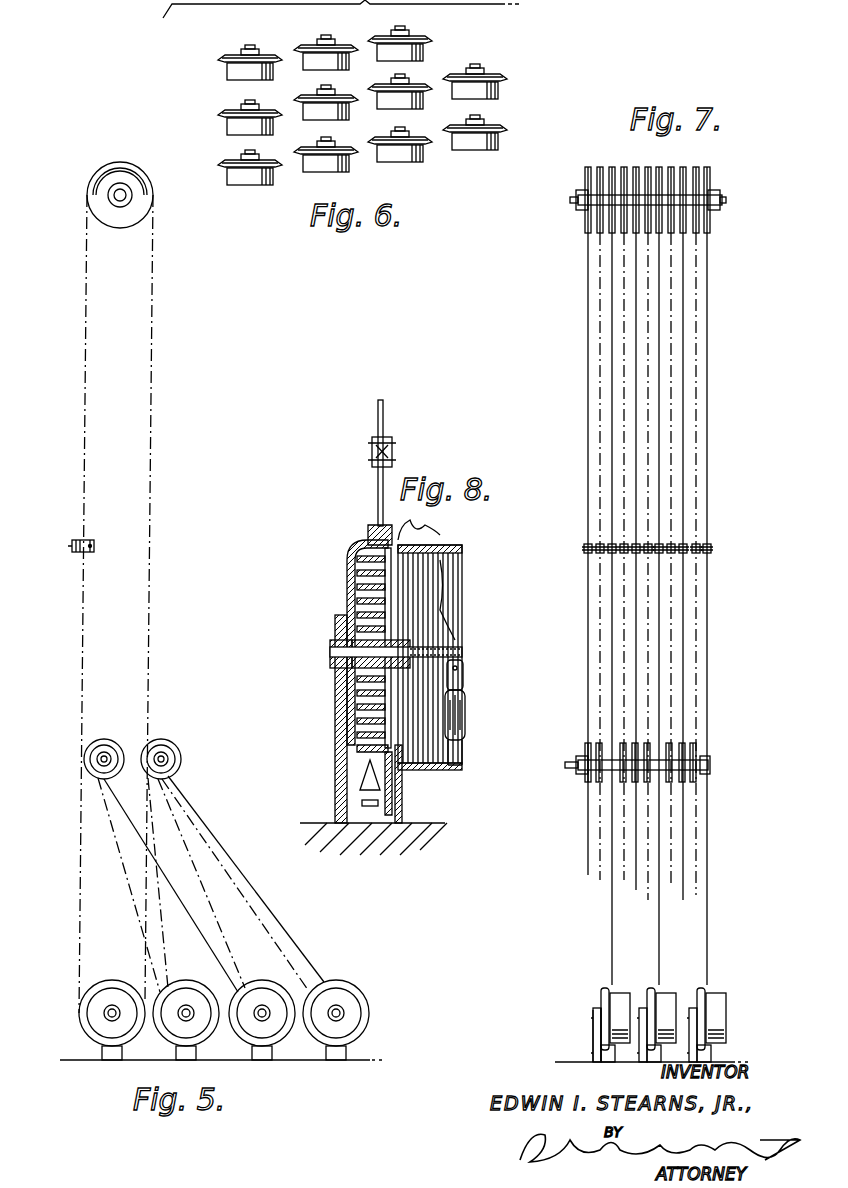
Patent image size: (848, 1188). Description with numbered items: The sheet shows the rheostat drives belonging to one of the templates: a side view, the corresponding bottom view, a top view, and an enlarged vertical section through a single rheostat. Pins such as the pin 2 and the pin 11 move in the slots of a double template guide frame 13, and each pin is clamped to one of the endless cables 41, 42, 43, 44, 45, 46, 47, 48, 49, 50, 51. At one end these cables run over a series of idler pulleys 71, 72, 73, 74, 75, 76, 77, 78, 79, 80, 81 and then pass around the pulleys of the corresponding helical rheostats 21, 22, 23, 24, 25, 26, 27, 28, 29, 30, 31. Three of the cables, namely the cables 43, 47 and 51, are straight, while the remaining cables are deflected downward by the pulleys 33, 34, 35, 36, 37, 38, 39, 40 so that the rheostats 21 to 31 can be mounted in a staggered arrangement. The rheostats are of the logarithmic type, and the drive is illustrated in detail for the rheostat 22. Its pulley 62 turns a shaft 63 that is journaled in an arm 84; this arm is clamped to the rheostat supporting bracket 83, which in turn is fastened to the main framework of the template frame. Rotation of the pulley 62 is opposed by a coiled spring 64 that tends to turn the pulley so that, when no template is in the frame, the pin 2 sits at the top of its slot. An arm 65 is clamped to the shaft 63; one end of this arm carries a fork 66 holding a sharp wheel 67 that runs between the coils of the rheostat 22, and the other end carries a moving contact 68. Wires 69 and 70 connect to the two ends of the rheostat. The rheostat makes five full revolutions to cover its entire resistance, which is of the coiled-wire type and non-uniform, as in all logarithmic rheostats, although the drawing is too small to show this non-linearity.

In FIG. 8, the pin 2 is at (372, 455).
In FIG. 5, the pin 11 is at (72, 553).
In FIG. 5, the double template guide frame 13 is at (370, 1060).
In FIG. 8, the double template guide frame 13 is at (322, 823).
In FIG. 7, the double template guide frame 13 is at (730, 1062).
In FIG. 6, the helical rheostat 21 is at (421, 42).
In FIG. 6, the helical rheostat 22 is at (341, 50).
In FIG. 8, the helical rheostat 22 is at (415, 768).
In FIG. 6, the helical rheostat 23 is at (227, 75).
In FIG. 7, the helical rheostat 23 is at (620, 996).
In FIG. 6, the helical rheostat 24 is at (499, 89).
In FIG. 6, the helical rheostat 25 is at (412, 95).
In FIG. 6, the helical rheostat 26 is at (303, 98).
In FIG. 6, the helical rheostat 27 is at (227, 126).
In FIG. 7, the helical rheostat 27 is at (668, 990).
In FIG. 6, the helical rheostat 28 is at (486, 151).
In FIG. 5, the helical rheostat 28 is at (362, 999).
In FIG. 6, the helical rheostat 29 is at (408, 162).
In FIG. 5, the helical rheostat 29 is at (266, 980).
In FIG. 6, the helical rheostat 30 is at (325, 172).
In FIG. 5, the helical rheostat 30 is at (182, 981).
In FIG. 6, the helical rheostat 31 is at (252, 184).
In FIG. 5, the helical rheostat 31 is at (79, 1003).
In FIG. 7, the helical rheostat 31 is at (720, 990).
In FIG. 7, the deflecting pulley 33 is at (585, 745).
In FIG. 7, the deflecting pulley 34 is at (599, 745).
In FIG. 7, the deflecting pulley 35 is at (623, 782).
In FIG. 7, the deflecting pulley 36 is at (635, 782).
In FIG. 7, the deflecting pulley 37 is at (647, 782).
In FIG. 7, the deflecting pulley 38 is at (669, 782).
In FIG. 7, the deflecting pulley 39 is at (682, 782).
In FIG. 7, the deflecting pulley 40 is at (693, 782).
In FIG. 7, the endless cable 41 is at (586, 294).
In FIG. 8, the endless cable 42 is at (376, 416).
In FIG. 7, the endless cable 42 is at (598, 318).
In FIG. 7, the endless cable 43 is at (610, 342).
In FIG. 7, the endless cable 44 is at (622, 363).
In FIG. 7, the endless cable 45 is at (634, 382).
In FIG. 7, the endless cable 46 is at (646, 405).
In FIG. 7, the endless cable 47 is at (661, 297).
In FIG. 7, the endless cable 48 is at (673, 330).
In FIG. 7, the endless cable 49 is at (685, 355).
In FIG. 7, the endless cable 50 is at (698, 381).
In FIG. 5, the endless cable 51 is at (148, 485).
In FIG. 7, the endless cable 51 is at (709, 410).
In FIG. 8, the pulley 62 is at (368, 530).
In FIG. 8, the shaft 63 is at (420, 651).
In FIG. 8, the coiled spring 64 is at (355, 562).
In FIG. 8, the arm 65 is at (463, 676).
In FIG. 8, the fork 66 is at (465, 700).
In FIG. 8, the sharp wheel 67 is at (462, 752).
In FIG. 8, the moving contact 68 is at (450, 556).
In FIG. 8, the wire 69 is at (440, 535).
In FIG. 8, the wire 70 is at (347, 792).
In FIG. 7, the idler pulley 71 is at (588, 233).
In FIG. 7, the idler pulley 72 is at (597, 218).
In FIG. 7, the idler pulley 73 is at (609, 181).
In FIG. 7, the idler pulley 74 is at (622, 168).
In FIG. 7, the idler pulley 75 is at (636, 167).
In FIG. 7, the idler pulley 76 is at (648, 168).
In FIG. 7, the idler pulley 77 is at (661, 170).
In FIG. 7, the idler pulley 78 is at (673, 174).
In FIG. 7, the idler pulley 79 is at (685, 181).
In FIG. 7, the idler pulley 80 is at (698, 218).
In FIG. 5, the idler pulley 81 is at (152, 205).
In FIG. 7, the idler pulley 81 is at (709, 233).
In FIG. 8, the rheostat supporting bracket 83 is at (402, 810).
In FIG. 8, the arm 84 is at (335, 692).
In FIG. 7, the arm 84 is at (593, 1035).